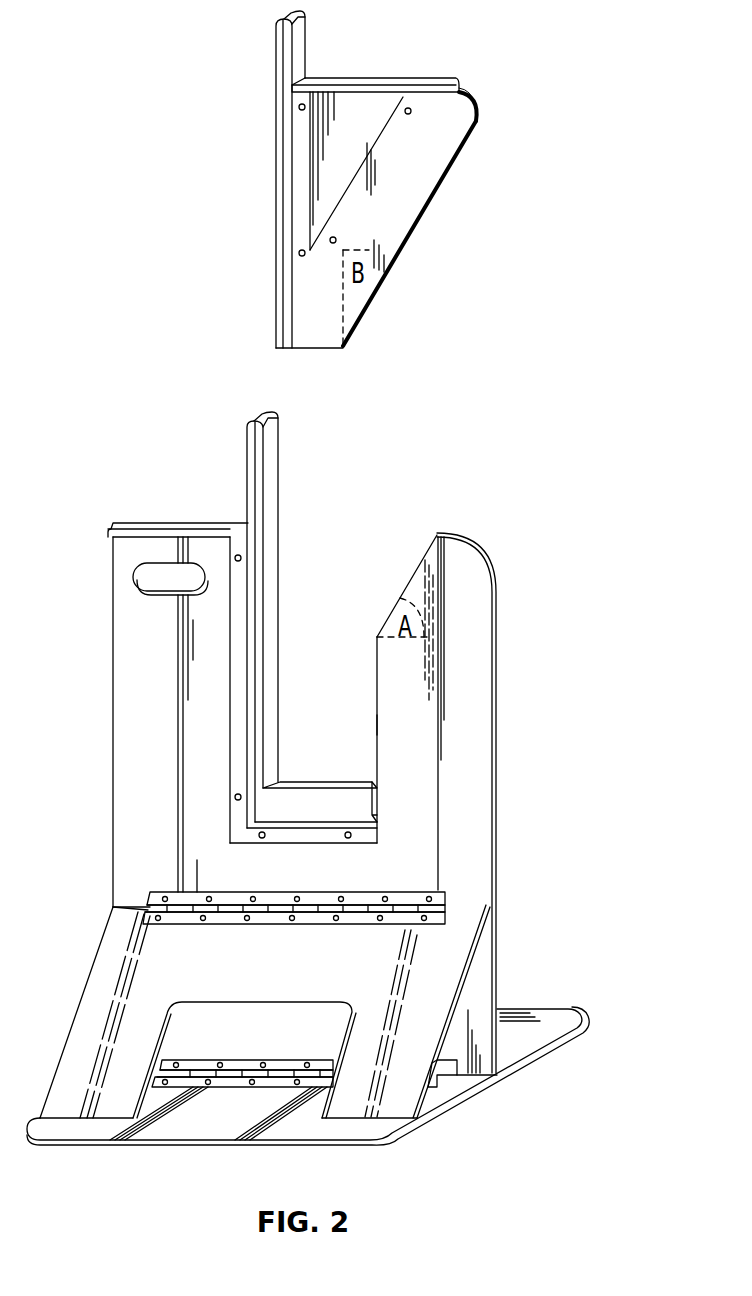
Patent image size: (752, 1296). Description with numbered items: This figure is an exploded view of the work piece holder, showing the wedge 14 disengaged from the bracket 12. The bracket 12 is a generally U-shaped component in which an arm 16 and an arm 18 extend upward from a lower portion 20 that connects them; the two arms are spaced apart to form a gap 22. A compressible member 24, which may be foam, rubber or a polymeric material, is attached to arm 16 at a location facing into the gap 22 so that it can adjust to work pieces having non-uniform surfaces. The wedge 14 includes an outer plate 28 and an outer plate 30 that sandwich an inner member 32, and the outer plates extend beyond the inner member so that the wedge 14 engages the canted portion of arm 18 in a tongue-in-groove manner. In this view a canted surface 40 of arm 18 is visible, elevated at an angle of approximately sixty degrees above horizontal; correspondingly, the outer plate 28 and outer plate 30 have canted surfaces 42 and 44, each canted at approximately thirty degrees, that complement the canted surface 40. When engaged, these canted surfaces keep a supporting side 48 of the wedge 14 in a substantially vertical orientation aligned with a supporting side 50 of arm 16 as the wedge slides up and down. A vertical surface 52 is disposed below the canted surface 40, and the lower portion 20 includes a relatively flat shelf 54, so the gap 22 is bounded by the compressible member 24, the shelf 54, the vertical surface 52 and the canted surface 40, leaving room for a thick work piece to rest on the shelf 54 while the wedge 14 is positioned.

The bracket 12 is at (477, 546).
The wedge 14 is at (445, 190).
The arm 16 is at (132, 707).
The arm 18 is at (475, 700).
The lower portion 20 is at (254, 1043).
The gap 22 is at (300, 690).
The compressible member 24 is at (270, 520).
The outer plate 28 is at (300, 159).
The outer plate 30 is at (478, 110).
The inner member 32 is at (378, 82).
The canted surface 40 is at (421, 562).
The canted surface 42 is at (386, 274).
The canted surface 44 is at (413, 244).
The supporting side 48 is at (284, 195).
The supporting side 50 is at (256, 481).
The vertical surface 52 is at (380, 718).
The shelf 54 is at (307, 786).